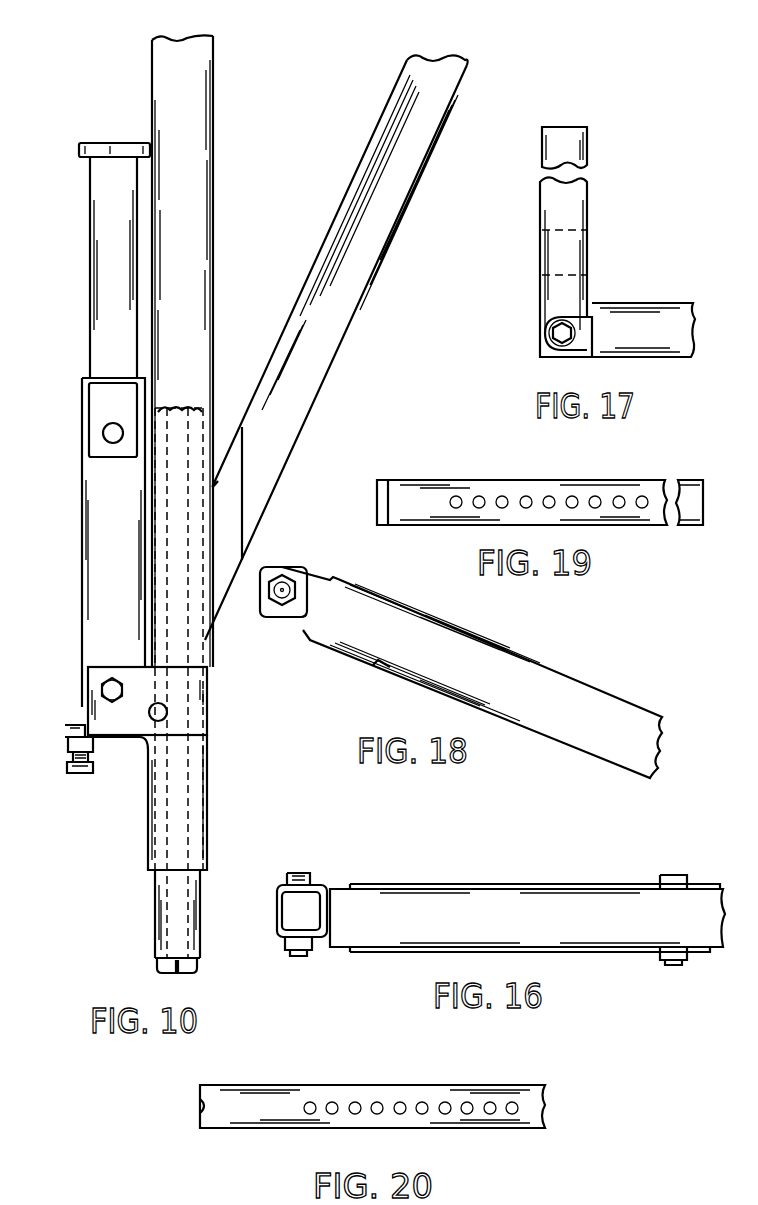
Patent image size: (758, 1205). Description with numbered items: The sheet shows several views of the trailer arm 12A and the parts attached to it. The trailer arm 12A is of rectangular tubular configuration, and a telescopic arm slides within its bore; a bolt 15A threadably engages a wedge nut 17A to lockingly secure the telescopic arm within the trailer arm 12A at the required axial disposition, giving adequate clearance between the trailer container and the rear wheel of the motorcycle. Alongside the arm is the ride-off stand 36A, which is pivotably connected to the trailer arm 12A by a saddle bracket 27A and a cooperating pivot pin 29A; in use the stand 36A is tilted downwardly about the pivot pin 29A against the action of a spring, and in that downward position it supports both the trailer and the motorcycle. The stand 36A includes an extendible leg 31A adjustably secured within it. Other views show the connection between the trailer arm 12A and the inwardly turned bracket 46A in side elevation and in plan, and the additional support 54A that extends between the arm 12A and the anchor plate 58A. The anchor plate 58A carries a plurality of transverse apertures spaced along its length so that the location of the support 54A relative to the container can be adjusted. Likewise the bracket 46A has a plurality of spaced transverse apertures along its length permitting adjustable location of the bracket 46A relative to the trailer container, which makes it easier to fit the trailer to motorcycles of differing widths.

In FIG. 10, the trailer arm 12A is at (213, 238).
In FIG. 17, the trailer arm 12A is at (663, 350).
In FIG. 16, the trailer arm 12A is at (507, 893).
In FIG. 10, the bolt 15A is at (155, 967).
In FIG. 10, the wedge nut 17A is at (203, 413).
In FIG. 10, the saddle bracket 27A is at (182, 725).
In FIG. 10, the pivot pin 29A is at (102, 687).
In FIG. 10, the extendible leg 31A is at (100, 263).
In FIG. 10, the ride-off stand 36A is at (82, 588).
In FIG. 17, the inwardly turned bracket 46A is at (577, 257).
In FIG. 16, the inwardly turned bracket 46A is at (277, 895).
In FIG. 10, the additional support 54A is at (320, 375).
In FIG. 18, the additional support 54A is at (495, 650).
In FIG. 19, the anchor plate 58A is at (518, 485).
In FIG. 18, the anchor plate 58A is at (300, 568).